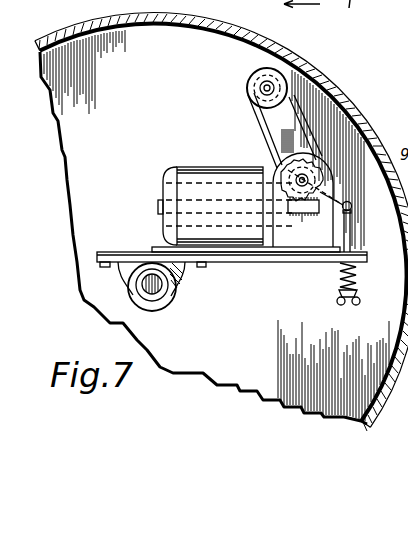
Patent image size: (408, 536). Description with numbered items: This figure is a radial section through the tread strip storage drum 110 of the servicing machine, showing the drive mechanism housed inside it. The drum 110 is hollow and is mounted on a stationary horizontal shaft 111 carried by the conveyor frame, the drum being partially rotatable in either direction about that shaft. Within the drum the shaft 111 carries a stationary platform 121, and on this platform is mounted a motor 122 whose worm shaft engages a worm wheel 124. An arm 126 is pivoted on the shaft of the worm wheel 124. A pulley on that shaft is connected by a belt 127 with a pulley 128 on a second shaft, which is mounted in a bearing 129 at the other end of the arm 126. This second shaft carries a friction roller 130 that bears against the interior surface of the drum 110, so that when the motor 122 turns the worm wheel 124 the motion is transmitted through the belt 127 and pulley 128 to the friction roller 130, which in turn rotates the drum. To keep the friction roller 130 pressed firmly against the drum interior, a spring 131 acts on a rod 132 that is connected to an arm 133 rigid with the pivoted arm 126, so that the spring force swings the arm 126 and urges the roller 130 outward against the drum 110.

The drum 110 is at (332, 100).
The stationary horizontal shaft 111 is at (172, 302).
The stationary platform 121 is at (247, 261).
The motor 122 is at (216, 166).
The worm wheel 124 is at (283, 176).
The arm 126 is at (305, 98).
The belt 127 is at (263, 128).
The pulley 128 is at (258, 94).
The bearing 129 is at (303, 200).
The friction roller 130 is at (249, 80).
The spring 131 is at (338, 281).
The rod 132 is at (351, 229).
The arm 133 is at (350, 203).